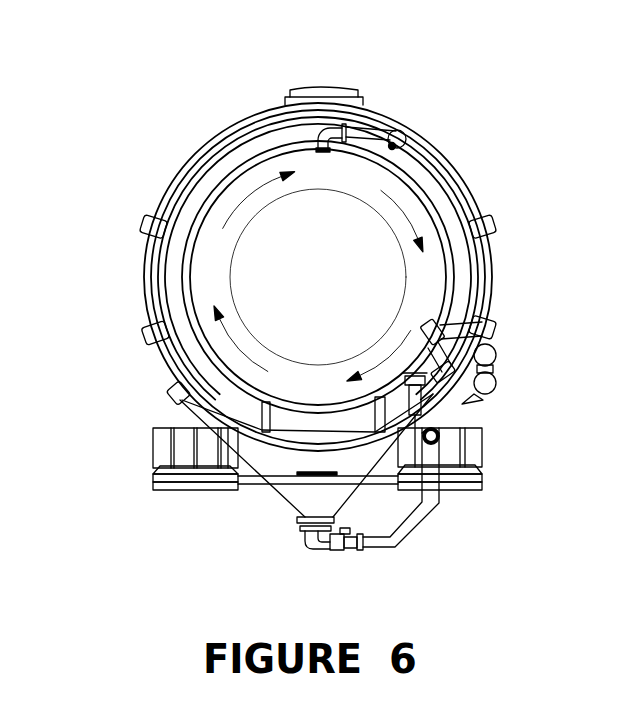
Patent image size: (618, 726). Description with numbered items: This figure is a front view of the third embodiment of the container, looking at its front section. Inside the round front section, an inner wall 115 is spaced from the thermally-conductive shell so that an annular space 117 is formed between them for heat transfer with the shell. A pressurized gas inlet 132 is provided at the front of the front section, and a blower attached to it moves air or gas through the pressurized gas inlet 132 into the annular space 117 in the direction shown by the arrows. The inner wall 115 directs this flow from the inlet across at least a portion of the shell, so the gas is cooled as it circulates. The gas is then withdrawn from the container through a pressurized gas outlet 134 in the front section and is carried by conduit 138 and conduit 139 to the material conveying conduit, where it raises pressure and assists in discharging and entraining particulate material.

The inner wall 115 is at (301, 186).
The pressurized gas outlet 134 is at (330, 135).
The annular space 117 is at (350, 178).
The conduit 138 is at (432, 185).
The pressurized gas inlet 132 is at (438, 312).
The conduit 139 is at (407, 523).